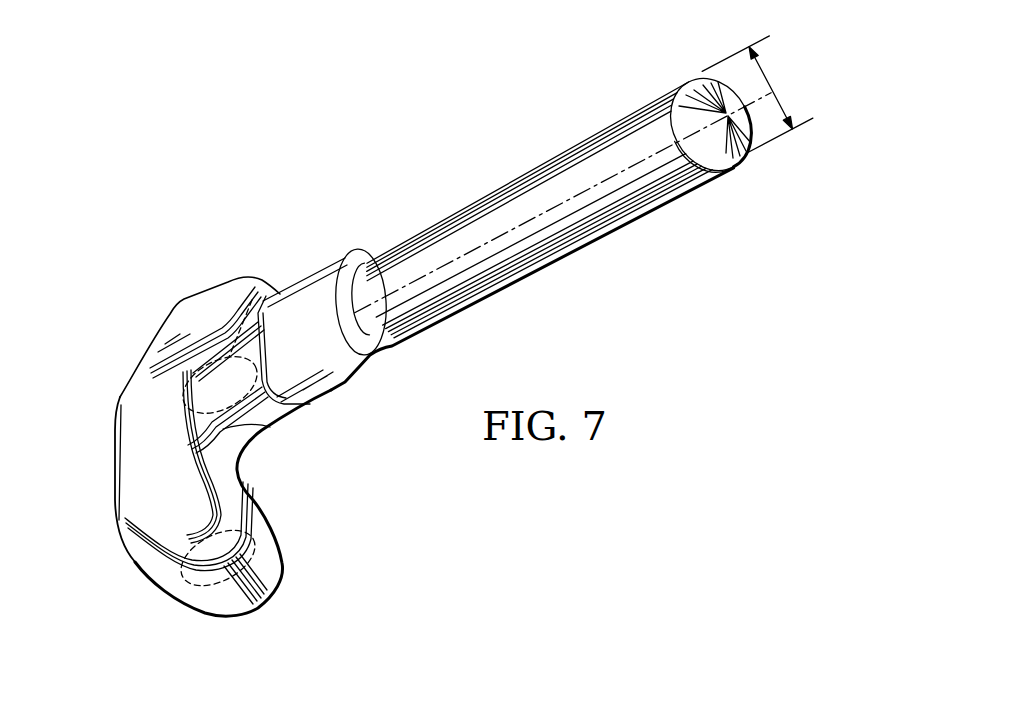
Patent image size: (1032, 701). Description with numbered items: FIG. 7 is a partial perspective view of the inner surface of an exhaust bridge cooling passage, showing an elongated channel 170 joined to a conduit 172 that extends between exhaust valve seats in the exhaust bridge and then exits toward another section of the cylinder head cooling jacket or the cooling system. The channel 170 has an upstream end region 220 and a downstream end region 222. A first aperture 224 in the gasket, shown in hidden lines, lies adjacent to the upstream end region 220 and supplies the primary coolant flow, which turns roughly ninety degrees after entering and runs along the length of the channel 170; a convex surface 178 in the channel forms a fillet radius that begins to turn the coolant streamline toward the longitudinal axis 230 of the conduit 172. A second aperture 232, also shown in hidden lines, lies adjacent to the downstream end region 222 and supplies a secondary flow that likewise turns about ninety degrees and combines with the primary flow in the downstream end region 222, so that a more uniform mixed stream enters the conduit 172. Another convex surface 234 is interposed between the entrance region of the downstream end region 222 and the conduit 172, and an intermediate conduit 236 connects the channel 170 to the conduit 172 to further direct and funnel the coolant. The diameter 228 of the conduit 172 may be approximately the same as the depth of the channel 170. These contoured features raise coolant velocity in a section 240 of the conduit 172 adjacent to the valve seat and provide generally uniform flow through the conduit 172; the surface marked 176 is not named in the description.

The channel 170 is at (209, 444).
The conduit 172 is at (578, 195).
The front recess surface 176 is at (264, 442).
The convex surface 178 is at (270, 427).
The upstream end region 220 is at (254, 624).
The downstream end region 222 is at (172, 294).
The first aperture 224 is at (184, 590).
The diameter 228 is at (770, 87).
The longitudinal axis 230 is at (568, 195).
The second aperture 232 is at (252, 300).
The convex surface 234 is at (200, 322).
The intermediate conduit 236 is at (327, 256).
The section 240 is at (604, 240).